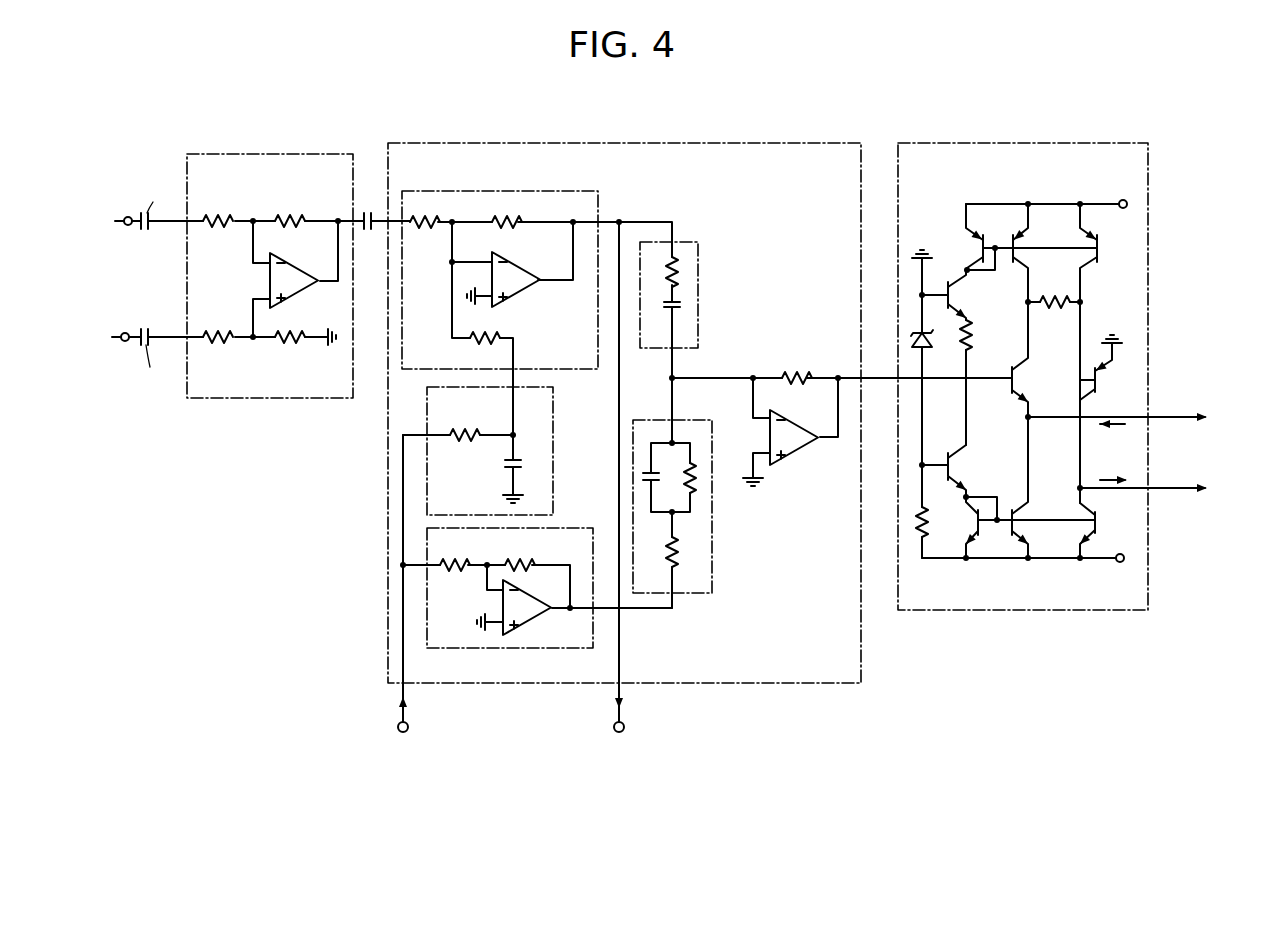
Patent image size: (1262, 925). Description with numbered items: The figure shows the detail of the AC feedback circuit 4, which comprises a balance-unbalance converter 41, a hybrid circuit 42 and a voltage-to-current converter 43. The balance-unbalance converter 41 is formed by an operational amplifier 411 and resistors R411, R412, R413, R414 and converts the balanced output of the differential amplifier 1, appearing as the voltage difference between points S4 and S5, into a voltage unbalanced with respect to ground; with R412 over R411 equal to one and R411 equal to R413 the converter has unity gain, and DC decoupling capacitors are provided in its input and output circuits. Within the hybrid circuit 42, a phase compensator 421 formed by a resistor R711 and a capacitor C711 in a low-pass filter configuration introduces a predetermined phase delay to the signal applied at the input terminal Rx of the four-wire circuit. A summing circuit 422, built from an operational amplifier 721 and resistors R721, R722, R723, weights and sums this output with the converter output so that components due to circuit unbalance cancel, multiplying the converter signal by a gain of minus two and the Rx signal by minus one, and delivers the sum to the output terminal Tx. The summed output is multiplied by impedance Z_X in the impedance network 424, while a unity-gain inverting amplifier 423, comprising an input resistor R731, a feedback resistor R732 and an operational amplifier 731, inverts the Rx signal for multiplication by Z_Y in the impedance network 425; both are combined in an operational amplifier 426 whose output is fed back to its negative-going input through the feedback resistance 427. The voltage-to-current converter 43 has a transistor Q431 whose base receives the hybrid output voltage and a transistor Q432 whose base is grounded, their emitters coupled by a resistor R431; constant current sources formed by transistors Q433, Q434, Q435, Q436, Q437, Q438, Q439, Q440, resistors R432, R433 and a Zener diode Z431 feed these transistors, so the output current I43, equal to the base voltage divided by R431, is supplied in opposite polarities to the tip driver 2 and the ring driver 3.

The differential amplifier 1 is at (120, 274).
The tip driver 2 is at (1144, 448).
The ring driver 3 is at (1170, 521).
The AC feedback circuit 4 is at (256, 105).
The balance-unbalance converter 41 is at (262, 154).
The hybrid circuit 42 is at (551, 143).
The voltage-to-current converter 43 is at (955, 143).
The operational amplifier 411 is at (297, 299).
The phase compensator 421 is at (553, 425).
The summing circuit 422 is at (560, 191).
The unity-gain inverting amplifier 423 is at (553, 528).
The impedance network 424 is at (698, 272).
The impedance network 425 is at (712, 535).
The operational amplifier 426 is at (797, 456).
The feedback resistance R_F 427 is at (801, 360).
The operational amplifier 721 is at (522, 298).
The operational amplifier 731 is at (538, 627).
The resistor R411 is at (225, 208).
The resistor R412 is at (294, 208).
The resistor R413 is at (217, 348).
The resistor R414 is at (286, 348).
The resistor R721 is at (429, 232).
The resistor R722 is at (472, 335).
The resistor R723 is at (506, 232).
The resistor R711 is at (455, 432).
The capacitor C711 is at (504, 466).
The input resistor R731 is at (456, 576).
The feedback resistor R732 is at (512, 560).
The resistor R431 is at (1054, 292).
The resistor R432 is at (990, 335).
The resistor R433 is at (945, 521).
The Zener diode Z431 is at (945, 358).
The transistor Q431 is at (1016, 382).
The transistor Q432 is at (1106, 403).
The transistor Q433 is at (1018, 243).
The transistor Q434 is at (1108, 270).
The transistor Q435 is at (1016, 514).
The transistor Q436 is at (1108, 510).
The transistor Q437 is at (978, 249).
The transistor Q438 is at (952, 298).
The transistor Q439 is at (951, 468).
The transistor Q440 is at (983, 538).
The point S4 is at (128, 217).
The point S5 is at (123, 342).
The input terminal Rx is at (408, 724).
The output terminal Tx is at (624, 724).
The output current I43 is at (1113, 452).